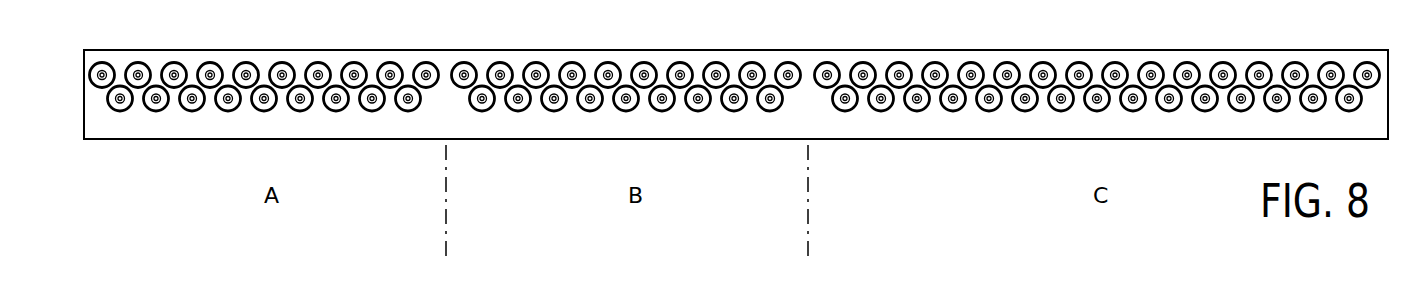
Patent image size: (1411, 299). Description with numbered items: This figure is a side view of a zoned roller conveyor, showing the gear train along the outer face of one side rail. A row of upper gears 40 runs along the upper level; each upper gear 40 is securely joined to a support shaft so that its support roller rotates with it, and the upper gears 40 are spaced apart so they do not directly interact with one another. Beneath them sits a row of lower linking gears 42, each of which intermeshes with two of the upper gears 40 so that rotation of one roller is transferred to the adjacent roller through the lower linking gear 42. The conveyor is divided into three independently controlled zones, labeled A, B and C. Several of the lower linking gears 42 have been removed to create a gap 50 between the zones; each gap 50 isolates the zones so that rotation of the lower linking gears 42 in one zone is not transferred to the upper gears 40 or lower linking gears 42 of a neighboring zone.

The upper gear 40 is at (318, 62).
The lower linking gear 42 is at (300, 111).
The gap 50 is at (446, 105).